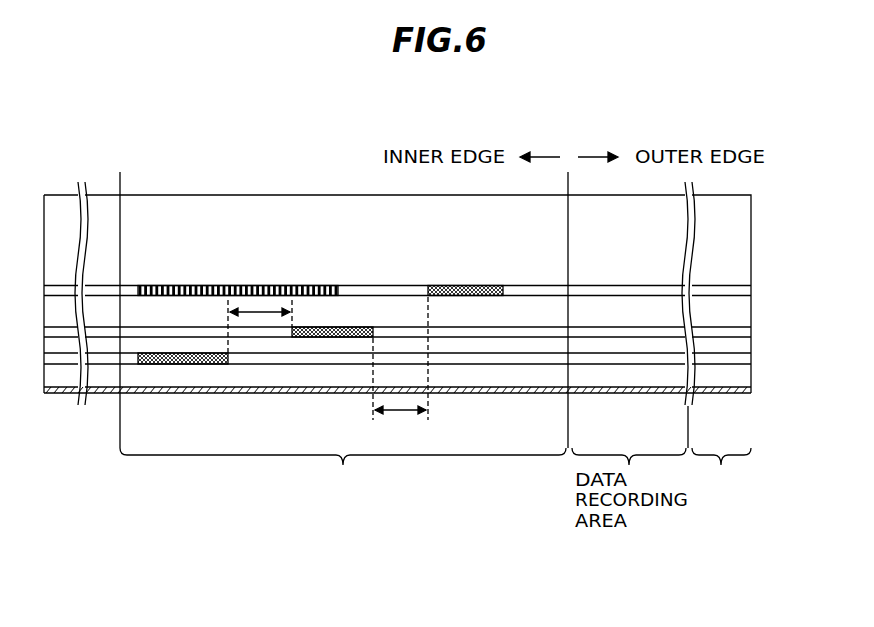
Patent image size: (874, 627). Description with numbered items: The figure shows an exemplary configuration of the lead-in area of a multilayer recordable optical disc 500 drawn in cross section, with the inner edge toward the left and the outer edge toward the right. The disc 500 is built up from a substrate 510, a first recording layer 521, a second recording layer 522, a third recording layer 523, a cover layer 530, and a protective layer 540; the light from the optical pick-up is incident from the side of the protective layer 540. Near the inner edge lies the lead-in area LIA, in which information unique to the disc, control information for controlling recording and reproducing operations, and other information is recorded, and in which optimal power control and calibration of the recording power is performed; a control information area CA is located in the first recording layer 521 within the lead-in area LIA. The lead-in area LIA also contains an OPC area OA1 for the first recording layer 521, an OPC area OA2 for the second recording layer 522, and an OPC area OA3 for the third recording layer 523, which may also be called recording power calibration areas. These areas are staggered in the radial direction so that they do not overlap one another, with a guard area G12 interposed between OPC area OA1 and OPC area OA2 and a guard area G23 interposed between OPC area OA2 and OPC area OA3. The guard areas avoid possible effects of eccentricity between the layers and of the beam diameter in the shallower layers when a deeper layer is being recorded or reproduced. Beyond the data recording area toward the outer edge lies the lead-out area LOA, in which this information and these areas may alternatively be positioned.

The three-layer optical disc 500 is at (333, 195).
The substrate 510 is at (745, 240).
The first recording layer 521 is at (745, 291).
The second recording layer 522 is at (745, 333).
The third recording layer 523 is at (745, 358).
The cover layer 530 is at (745, 375).
The protective layer 540 is at (745, 393).
The control information area CA is at (197, 285).
The OPC area for the first recording layer OA1 is at (475, 285).
The OPC area for the second recording layer OA2 is at (350, 327).
The OPC area for the third recording layer OA3 is at (195, 364).
The guard area G23 is at (268, 312).
The guard area G12 is at (400, 369).
The lead-in area LIA is at (343, 469).
The lead-out area LOA is at (721, 465).